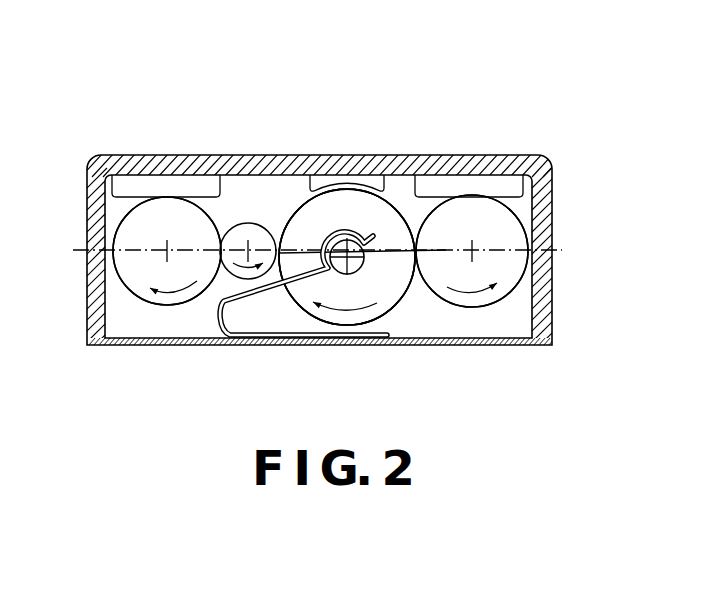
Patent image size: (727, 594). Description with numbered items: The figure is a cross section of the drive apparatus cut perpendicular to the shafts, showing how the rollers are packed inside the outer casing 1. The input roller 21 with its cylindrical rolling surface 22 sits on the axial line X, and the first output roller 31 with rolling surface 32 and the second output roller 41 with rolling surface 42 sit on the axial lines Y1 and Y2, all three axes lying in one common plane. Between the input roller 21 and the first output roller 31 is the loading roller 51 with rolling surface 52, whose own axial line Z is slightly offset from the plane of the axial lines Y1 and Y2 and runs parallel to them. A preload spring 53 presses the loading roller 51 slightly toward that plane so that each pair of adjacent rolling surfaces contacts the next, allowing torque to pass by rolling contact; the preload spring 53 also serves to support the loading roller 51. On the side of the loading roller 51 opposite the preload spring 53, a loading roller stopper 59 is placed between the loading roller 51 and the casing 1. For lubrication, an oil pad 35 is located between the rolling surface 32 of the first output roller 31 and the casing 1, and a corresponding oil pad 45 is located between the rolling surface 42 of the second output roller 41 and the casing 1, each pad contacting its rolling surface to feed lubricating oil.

The outer casing 1 is at (95, 157).
The input roller 21 is at (308, 216).
The rolling surface of input roller 22 is at (320, 194).
The loading roller stopper 59 is at (357, 180).
The first output roller 31 is at (443, 291).
The rolling surface of first output roller 32 is at (508, 292).
The oil pad 35 is at (490, 184).
The second output roller 41 is at (135, 276).
The rolling surface of second output roller 42 is at (184, 304).
The oil pad 45 is at (142, 187).
The loading roller 51 is at (327, 313).
The rolling surface of loading roller 52 is at (398, 307).
The preload spring 53 is at (233, 339).
The axial line of input shaft X is at (247, 240).
The axial line of first output shaft Y1 is at (472, 250).
The axial line of second output shaft Y2 is at (167, 250).
The axial line of loading roller shaft Z is at (348, 257).